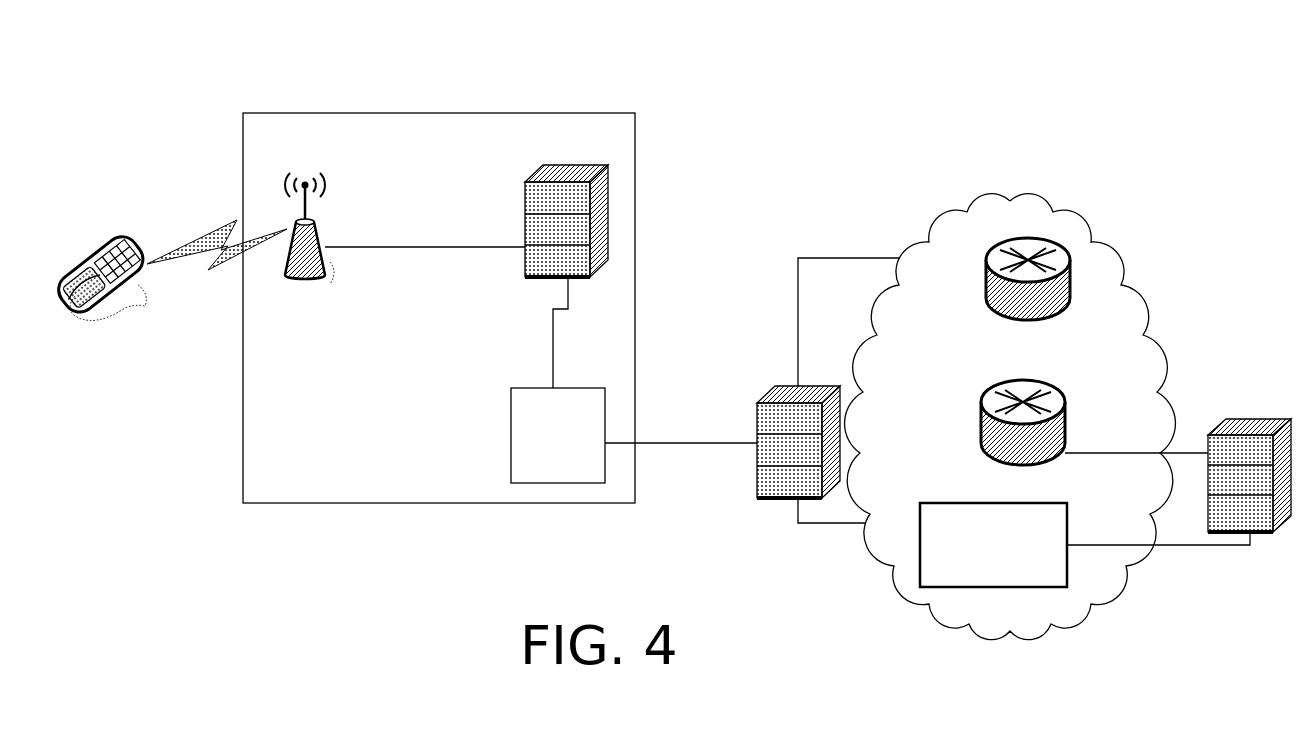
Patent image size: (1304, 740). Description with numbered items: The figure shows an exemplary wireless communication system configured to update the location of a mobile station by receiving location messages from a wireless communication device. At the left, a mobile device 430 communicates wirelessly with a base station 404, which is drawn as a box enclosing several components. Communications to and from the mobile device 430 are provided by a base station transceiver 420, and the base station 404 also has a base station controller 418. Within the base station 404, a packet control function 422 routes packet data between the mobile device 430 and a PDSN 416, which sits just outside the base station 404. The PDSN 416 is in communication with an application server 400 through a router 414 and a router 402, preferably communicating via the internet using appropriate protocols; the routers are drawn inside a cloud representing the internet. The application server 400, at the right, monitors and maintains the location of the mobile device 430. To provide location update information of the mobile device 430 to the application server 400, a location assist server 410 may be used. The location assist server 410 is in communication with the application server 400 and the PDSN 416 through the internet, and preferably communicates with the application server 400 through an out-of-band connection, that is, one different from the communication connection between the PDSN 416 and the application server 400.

The application server 400 is at (1250, 419).
The router 402 is at (1023, 441).
The base station 404 is at (408, 113).
The location assist server 410 is at (993, 545).
The router 414 is at (1028, 295).
The PDSN 416 is at (757, 480).
The base station controller 418 is at (570, 165).
The base station transceiver 420 is at (309, 243).
The packet control function 422 is at (558, 435).
The mobile device 430 is at (100, 293).